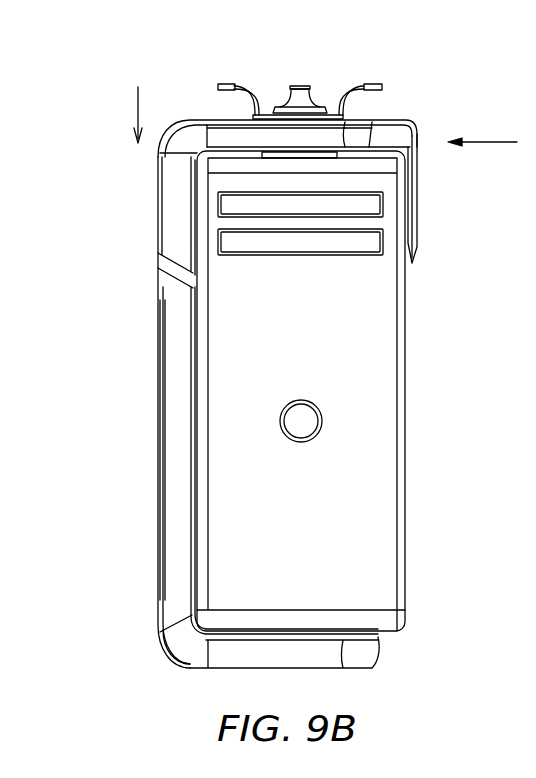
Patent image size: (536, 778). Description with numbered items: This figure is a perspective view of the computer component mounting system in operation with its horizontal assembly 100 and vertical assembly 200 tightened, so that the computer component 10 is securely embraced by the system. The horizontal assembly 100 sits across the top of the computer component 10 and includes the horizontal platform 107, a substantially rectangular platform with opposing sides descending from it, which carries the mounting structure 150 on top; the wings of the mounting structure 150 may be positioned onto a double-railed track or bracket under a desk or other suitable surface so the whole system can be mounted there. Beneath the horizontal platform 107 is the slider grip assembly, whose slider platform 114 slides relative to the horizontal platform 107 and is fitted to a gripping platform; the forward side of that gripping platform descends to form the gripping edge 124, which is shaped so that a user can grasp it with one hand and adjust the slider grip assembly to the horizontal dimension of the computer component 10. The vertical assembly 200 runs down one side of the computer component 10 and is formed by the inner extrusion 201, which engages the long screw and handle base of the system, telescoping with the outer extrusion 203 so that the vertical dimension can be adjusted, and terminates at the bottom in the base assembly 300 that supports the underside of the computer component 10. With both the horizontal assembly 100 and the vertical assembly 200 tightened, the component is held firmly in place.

The computer component 10 is at (422, 437).
The horizontal assembly 100 is at (430, 137).
The horizontal platform 107 is at (227, 134).
The slider platform 114 is at (393, 132).
The gripping edge 124 is at (415, 228).
The mounting structure 150 is at (370, 60).
The vertical assembly 200 is at (144, 374).
The inner extrusion 201 is at (178, 208).
The outer extrusion 203 is at (178, 513).
The base assembly 300 is at (398, 655).